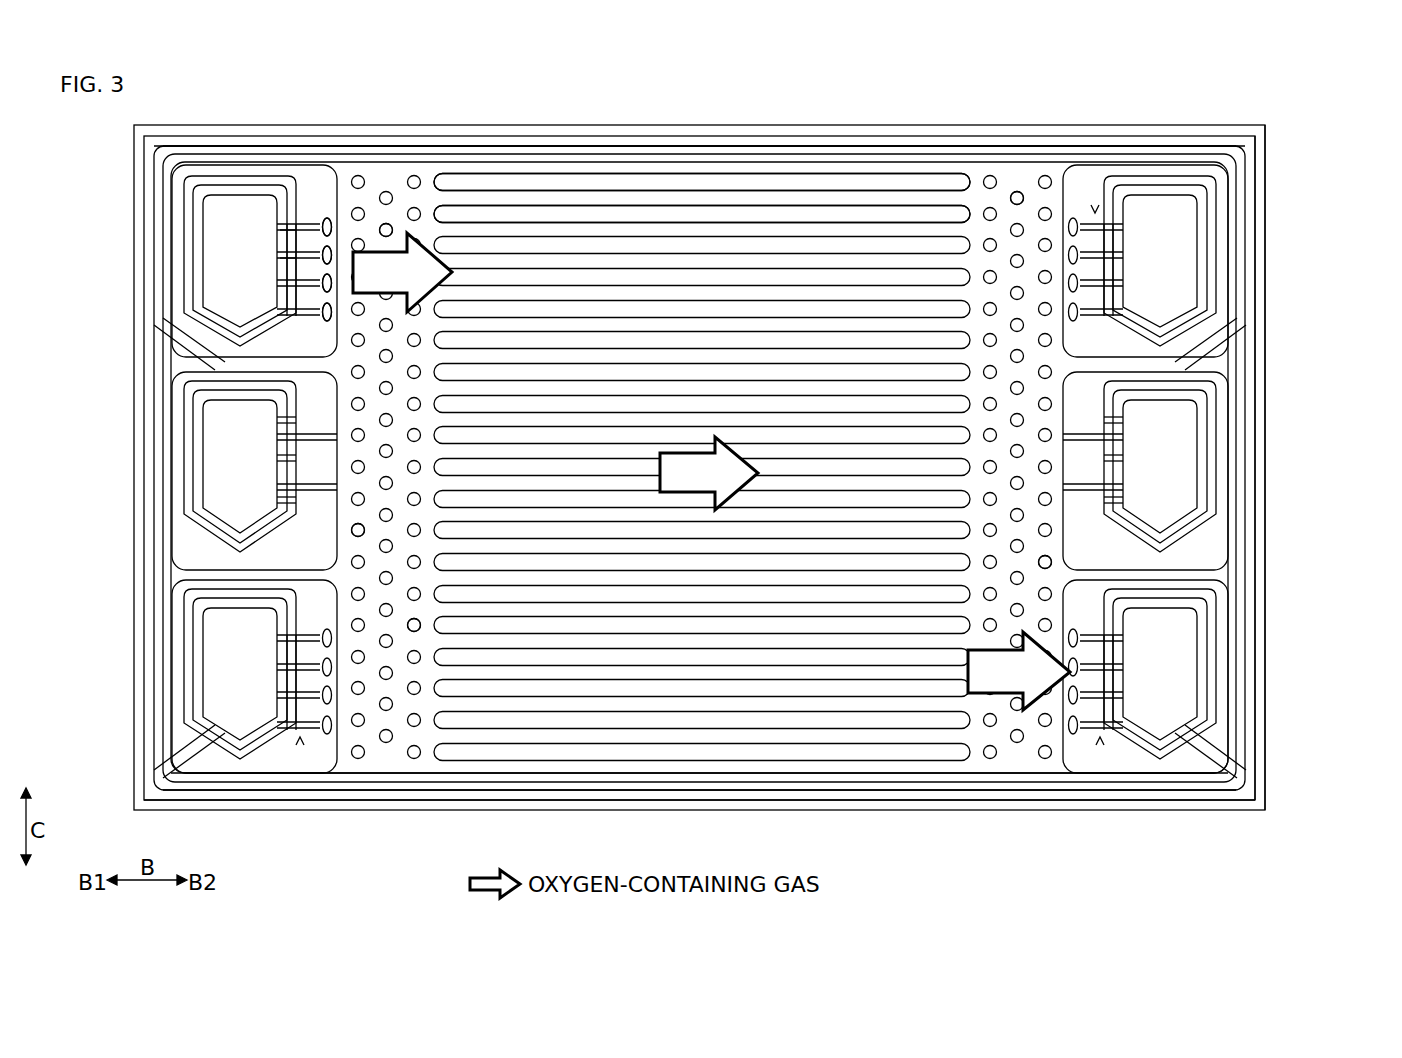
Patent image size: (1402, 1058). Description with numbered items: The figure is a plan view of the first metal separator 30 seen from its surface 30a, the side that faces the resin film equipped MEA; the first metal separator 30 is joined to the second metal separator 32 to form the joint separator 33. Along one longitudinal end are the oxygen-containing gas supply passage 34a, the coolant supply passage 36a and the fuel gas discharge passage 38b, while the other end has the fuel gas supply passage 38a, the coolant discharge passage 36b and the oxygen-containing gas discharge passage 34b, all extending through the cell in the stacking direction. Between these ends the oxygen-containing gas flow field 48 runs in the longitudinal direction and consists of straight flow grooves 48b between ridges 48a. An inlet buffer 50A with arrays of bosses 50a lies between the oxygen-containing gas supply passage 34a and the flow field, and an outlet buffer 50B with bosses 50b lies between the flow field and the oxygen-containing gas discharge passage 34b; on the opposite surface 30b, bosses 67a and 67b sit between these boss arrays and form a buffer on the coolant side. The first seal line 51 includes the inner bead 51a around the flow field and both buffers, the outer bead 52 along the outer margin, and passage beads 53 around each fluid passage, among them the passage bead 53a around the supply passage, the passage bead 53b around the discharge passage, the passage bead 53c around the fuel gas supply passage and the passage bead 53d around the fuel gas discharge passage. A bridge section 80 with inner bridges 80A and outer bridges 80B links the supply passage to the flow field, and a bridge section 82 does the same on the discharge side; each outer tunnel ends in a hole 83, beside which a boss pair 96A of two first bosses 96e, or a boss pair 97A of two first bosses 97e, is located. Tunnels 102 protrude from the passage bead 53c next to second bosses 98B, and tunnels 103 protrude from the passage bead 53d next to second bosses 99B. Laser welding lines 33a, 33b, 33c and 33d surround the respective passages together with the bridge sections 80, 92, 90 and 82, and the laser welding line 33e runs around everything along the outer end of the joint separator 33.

The first metal separator 30 is at (800, 168).
The surface 30a is at (1250, 772).
The surface 30b is at (1262, 785).
The second metal separator 32 is at (862, 168).
The joint separator 33 is at (1200, 80).
The laser welding line 33a is at (175, 335).
The laser welding line 33b is at (180, 600).
The laser welding line 33c is at (1248, 135).
The laser welding line 33d is at (1240, 735).
The laser welding line 33e is at (940, 165).
The oxygen-containing gas supply passage 34a is at (220, 213).
The oxygen-containing gas discharge passage 34b is at (1180, 690).
The coolant supply passage 36a is at (222, 444).
The coolant discharge passage 36b is at (1180, 445).
The fuel gas supply passage 38a is at (1180, 218).
The fuel gas discharge passage 38b is at (220, 633).
The oxygen-containing gas flow field 48 is at (702, 405).
The ridges 48a is at (662, 215).
The straight flow grooves 48b is at (735, 200).
The inlet buffer 50A is at (410, 625).
The bosses 50a is at (386, 578).
The outlet buffer 50B is at (1045, 565).
The bosses 50b is at (1045, 562).
The first seal line 51 is at (855, 802).
The bead seal (inner bead) 51a is at (885, 780).
The bead seal (outer bead) 52 is at (815, 793).
The bead seals (passage beads) 53 is at (185, 385).
The passage bead 53a is at (188, 238).
The passage bead 53b is at (1218, 590).
The passage bead 53c is at (1212, 186).
The passage bead 53d is at (187, 712).
The bosses 67a is at (372, 226).
The bosses 67b is at (1022, 188).
The bridge section 80 is at (312, 205).
The inner bridges 80A is at (300, 218).
The outer bridges 80B is at (295, 262).
The bridge section 82 is at (1100, 750).
The hole 83 is at (290, 297).
The bridge section 90 is at (1095, 200).
The bridge section 92 is at (300, 750).
The boss pairs 96A is at (364, 188).
The first bosses 96e is at (327, 220).
The boss pairs 97A is at (1054, 759).
The first bosses 97e is at (1068, 715).
The second bosses 98B is at (1078, 245).
The second bosses 99B is at (330, 705).
The tunnels 102 is at (1112, 257).
The tunnels 103 is at (295, 678).